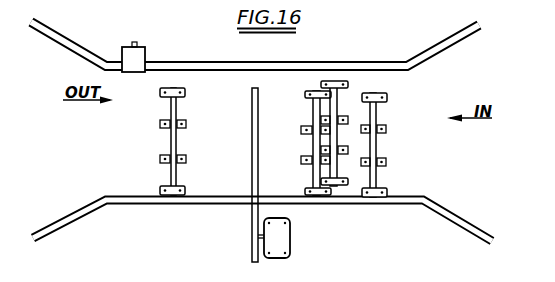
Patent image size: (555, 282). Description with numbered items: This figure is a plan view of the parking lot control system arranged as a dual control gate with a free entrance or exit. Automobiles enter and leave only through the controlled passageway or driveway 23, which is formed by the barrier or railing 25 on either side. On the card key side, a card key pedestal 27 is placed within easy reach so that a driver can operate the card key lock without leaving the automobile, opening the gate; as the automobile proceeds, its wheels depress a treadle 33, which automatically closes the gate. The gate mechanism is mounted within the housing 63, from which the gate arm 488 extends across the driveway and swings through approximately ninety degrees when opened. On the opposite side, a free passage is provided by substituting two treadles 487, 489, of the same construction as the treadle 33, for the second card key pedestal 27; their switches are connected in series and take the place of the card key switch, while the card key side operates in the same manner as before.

The controlled passageway or driveway 23 is at (475, 177).
The barrier or railing 25 is at (375, 61).
The card key pedestal 27 is at (135, 45).
The treadle 33 is at (163, 109).
The housing 63 is at (291, 253).
The treadle 487 is at (316, 174).
The gate arm 488 is at (252, 125).
The treadle 489 is at (313, 115).